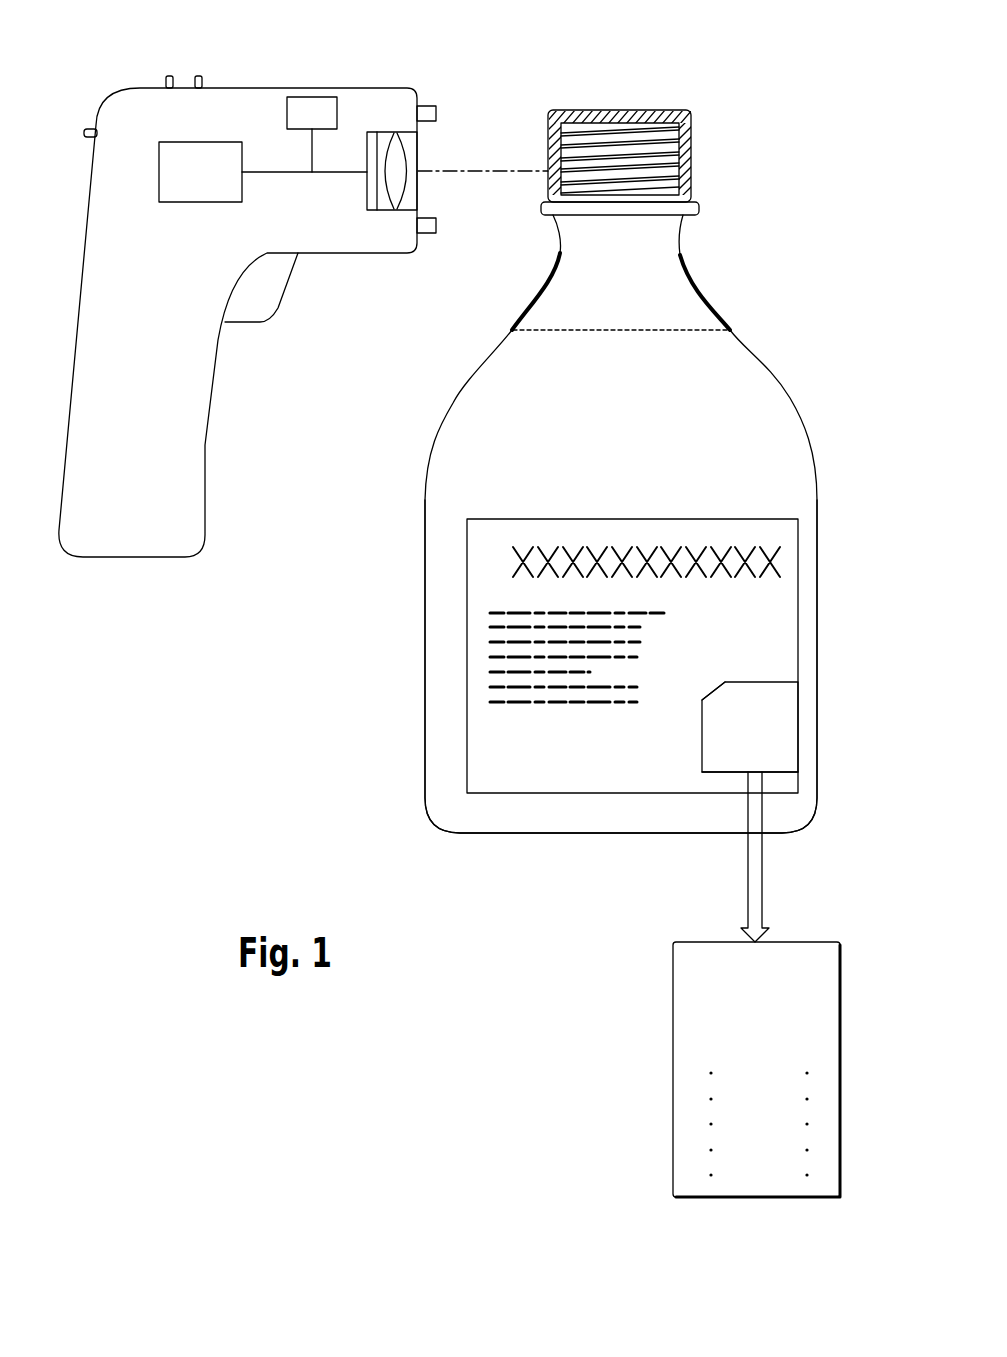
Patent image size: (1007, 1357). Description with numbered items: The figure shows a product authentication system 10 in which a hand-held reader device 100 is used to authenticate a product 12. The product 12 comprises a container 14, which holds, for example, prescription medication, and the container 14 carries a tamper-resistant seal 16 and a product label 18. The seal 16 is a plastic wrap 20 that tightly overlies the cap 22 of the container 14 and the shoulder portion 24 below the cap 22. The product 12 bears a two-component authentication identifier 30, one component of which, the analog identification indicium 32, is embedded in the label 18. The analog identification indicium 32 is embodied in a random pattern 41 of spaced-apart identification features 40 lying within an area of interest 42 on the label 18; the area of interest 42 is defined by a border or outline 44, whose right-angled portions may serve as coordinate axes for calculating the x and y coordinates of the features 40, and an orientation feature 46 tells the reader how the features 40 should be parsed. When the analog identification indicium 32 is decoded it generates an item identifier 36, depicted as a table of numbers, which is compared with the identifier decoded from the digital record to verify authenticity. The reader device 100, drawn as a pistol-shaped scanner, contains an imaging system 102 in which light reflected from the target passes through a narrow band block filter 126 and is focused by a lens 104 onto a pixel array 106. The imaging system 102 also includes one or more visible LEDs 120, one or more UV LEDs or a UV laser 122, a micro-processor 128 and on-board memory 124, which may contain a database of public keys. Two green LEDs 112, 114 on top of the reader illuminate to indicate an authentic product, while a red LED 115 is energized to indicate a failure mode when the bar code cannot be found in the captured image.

The identification or authentication system 10 is at (772, 114).
The product 12 is at (404, 511).
The container 14 is at (797, 396).
The tamper-resistant seal 16 is at (693, 247).
The product label 18 is at (798, 540).
The plastic wrap 20 is at (703, 298).
The cap 22 is at (692, 152).
The shoulder portion 24 is at (580, 293).
The authentication identifier 30 is at (690, 731).
The analog identification indicium 32 is at (708, 746).
The item identifier 36 is at (673, 988).
The identification features 40 is at (782, 750).
The random pattern 41 is at (770, 753).
The area of interest 42 is at (764, 672).
The border or outline 44 is at (723, 773).
The orientation feature 46 is at (712, 688).
The reader device 100 is at (58, 311).
The imaging system 102 is at (370, 225).
The lens 104 is at (397, 203).
The pixel array 106 is at (367, 147).
The green LED 112 is at (171, 75).
The green LED 114 is at (200, 75).
The red LED 115 is at (86, 132).
The visible LED 120 is at (432, 106).
The UV LED or UV laser 122 is at (430, 233).
The on board memory 124 is at (287, 118).
The narrow band block filter 126 is at (420, 148).
The micro-processor 128 is at (208, 190).